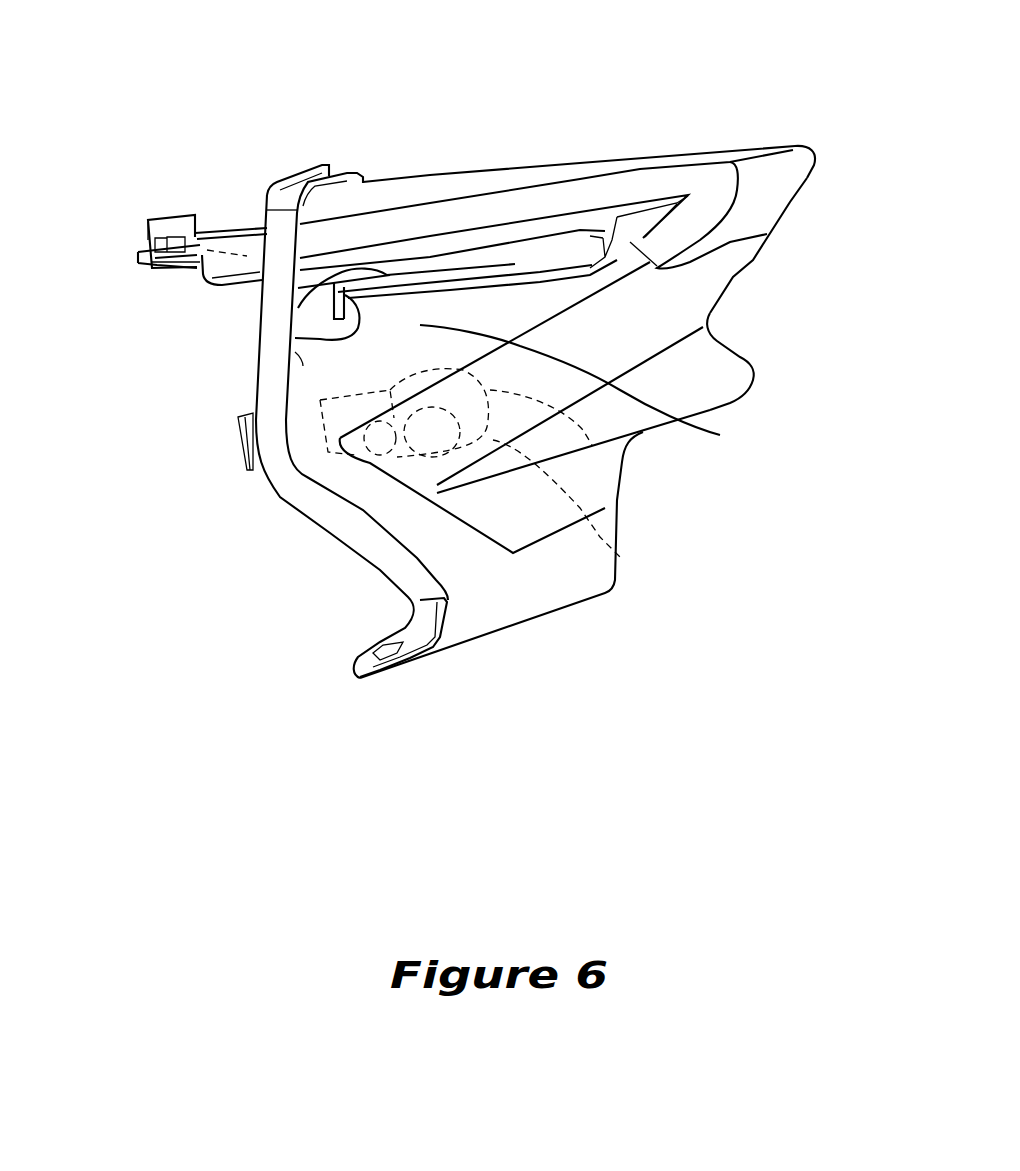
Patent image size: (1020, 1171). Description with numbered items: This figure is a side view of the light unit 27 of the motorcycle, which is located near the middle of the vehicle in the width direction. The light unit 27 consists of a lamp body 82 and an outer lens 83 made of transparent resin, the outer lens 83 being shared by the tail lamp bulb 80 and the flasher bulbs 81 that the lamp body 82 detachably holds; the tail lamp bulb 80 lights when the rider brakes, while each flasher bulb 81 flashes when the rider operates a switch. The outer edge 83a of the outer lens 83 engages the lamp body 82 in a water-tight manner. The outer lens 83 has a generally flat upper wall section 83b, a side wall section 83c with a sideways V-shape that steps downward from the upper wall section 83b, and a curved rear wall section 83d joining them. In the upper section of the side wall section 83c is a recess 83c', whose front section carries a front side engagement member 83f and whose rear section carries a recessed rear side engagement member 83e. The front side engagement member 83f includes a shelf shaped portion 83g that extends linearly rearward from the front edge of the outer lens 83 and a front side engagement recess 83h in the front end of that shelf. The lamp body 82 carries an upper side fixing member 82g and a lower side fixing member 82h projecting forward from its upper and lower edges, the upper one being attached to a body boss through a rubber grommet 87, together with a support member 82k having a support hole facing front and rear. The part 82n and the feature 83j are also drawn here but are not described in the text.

The light unit 27 is at (802, 92).
The lamp body 82 is at (294, 178).
The upper side fixing member 82g is at (247, 228).
The lower side fixing member 82h is at (403, 665).
The support member 82k is at (173, 212).
The arm end of first bracket 82n is at (147, 229).
The outer lens 83 is at (714, 143).
The outer edge 83a is at (303, 370).
The upper wall section 83b is at (557, 164).
The side wall section 83c is at (591, 407).
The recess 83c' is at (494, 187).
The rear wall section 83d is at (753, 260).
The rear side engagement member 83e is at (767, 234).
The front side engagement member 83f is at (147, 293).
The shelf shaped portion 83g is at (335, 278).
The front side engagement recess 83h is at (295, 338).
The notch of second bracket 83j is at (745, 357).
The rubber grommet 87 is at (173, 268).
The tail lamp bulb 80 is at (583, 430).
The flasher bulb 81 is at (620, 557).